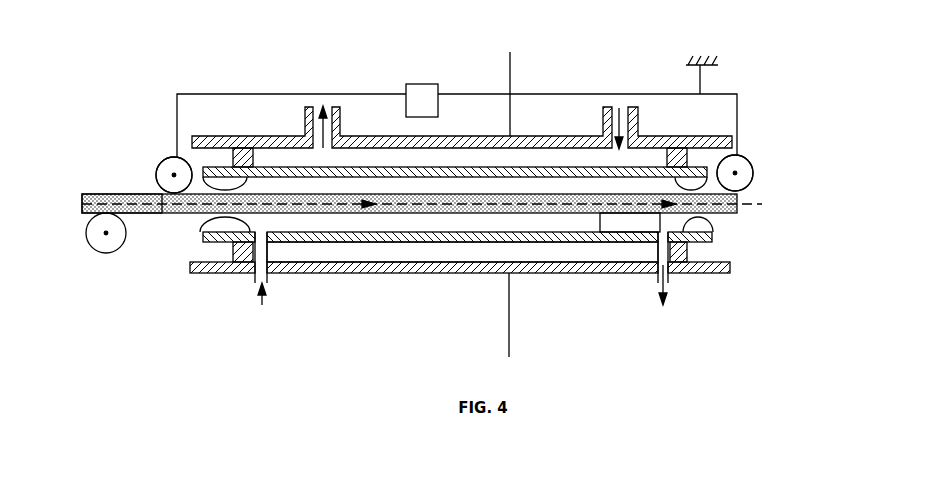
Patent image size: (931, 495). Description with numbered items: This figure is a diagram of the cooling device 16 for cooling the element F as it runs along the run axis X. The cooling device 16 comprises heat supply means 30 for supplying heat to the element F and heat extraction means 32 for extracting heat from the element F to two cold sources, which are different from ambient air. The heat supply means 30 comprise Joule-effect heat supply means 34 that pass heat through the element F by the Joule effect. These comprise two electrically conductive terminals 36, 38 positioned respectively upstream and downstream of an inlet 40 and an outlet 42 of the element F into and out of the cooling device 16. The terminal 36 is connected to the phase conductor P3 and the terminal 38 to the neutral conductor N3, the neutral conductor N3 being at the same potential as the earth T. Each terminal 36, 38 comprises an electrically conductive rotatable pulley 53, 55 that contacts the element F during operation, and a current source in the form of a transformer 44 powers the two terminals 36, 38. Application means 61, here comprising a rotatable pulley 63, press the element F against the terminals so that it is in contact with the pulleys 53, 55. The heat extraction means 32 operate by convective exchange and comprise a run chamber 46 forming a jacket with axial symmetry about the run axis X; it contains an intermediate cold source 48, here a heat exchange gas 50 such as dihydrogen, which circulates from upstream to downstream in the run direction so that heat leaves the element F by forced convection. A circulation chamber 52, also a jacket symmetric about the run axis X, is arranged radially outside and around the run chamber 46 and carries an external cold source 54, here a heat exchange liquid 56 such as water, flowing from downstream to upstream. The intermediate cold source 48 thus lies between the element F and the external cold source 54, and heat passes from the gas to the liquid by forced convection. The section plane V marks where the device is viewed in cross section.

The cooling device 16 is at (229, 80).
The heat supply means 30 is at (405, 56).
The heat extraction means 32 is at (549, 290).
The Joule-effect heat supply means 34 is at (762, 195).
The electrically conductive terminal 36 is at (145, 182).
The electrically conductive terminal 38 is at (756, 153).
The inlet 40 is at (205, 232).
The outlet 42 is at (716, 216).
The transformer 44 is at (418, 97).
The run chamber 46 is at (562, 242).
The intermediate cold source 48 is at (618, 229).
The heat exchange gas 50 is at (653, 185).
The circulation chamber 52 is at (379, 275).
The electrically conductive rotatable pulley 53 is at (177, 160).
The external cold source 54 is at (318, 256).
The electrically conductive rotatable pulley 55 is at (738, 157).
The heat exchange liquid 56 is at (588, 157).
The application means 61 is at (103, 262).
The rotatable pulley 63 is at (106, 197).
The element F is at (196, 215).
The run axis X is at (438, 203).
The section plane V- V is at (522, 70).
The earth T is at (702, 61).
The phase conductor P3 is at (177, 80).
The neutral conductor N3 is at (735, 82).